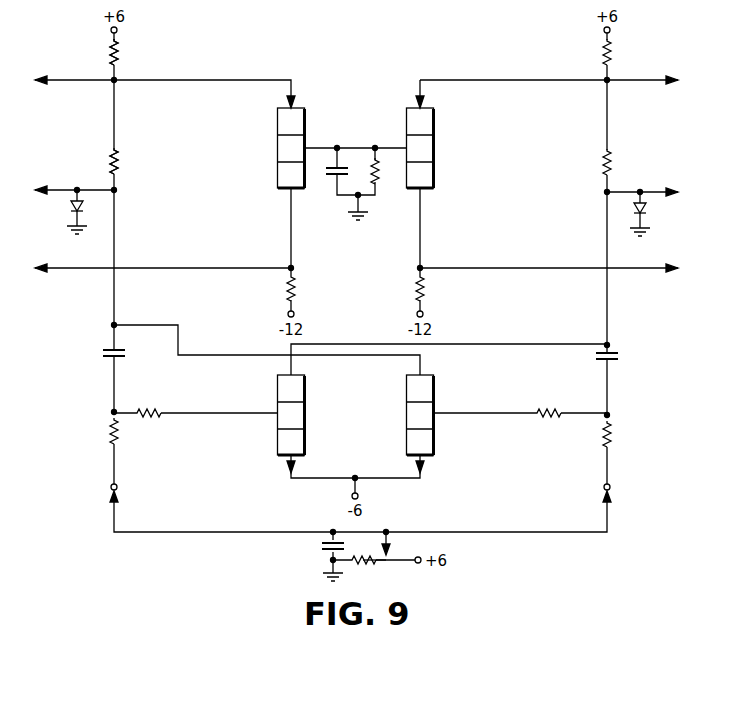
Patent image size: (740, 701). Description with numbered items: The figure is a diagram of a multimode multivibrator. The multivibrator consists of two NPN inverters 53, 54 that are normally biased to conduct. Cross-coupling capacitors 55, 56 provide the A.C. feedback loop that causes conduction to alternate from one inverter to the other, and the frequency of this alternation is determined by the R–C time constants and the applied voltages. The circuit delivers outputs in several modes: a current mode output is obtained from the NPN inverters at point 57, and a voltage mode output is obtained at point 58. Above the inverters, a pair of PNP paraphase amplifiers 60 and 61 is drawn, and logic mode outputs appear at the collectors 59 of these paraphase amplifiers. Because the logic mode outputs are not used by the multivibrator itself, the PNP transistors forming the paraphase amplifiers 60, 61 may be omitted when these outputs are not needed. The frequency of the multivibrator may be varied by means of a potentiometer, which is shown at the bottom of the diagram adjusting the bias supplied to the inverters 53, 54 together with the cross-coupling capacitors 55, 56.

The NPN inverter 53 is at (262, 407).
The NPN inverter 54 is at (448, 407).
The cross-coupling capacitor 55 is at (122, 355).
The cross-coupling capacitor 56 is at (616, 355).
The current mode output point 57 is at (116, 78).
The voltage mode output point 58 is at (116, 189).
The collector 59 is at (277, 190).
The paraphase amplifier 60 is at (272, 142).
The paraphase amplifier 61 is at (442, 142).